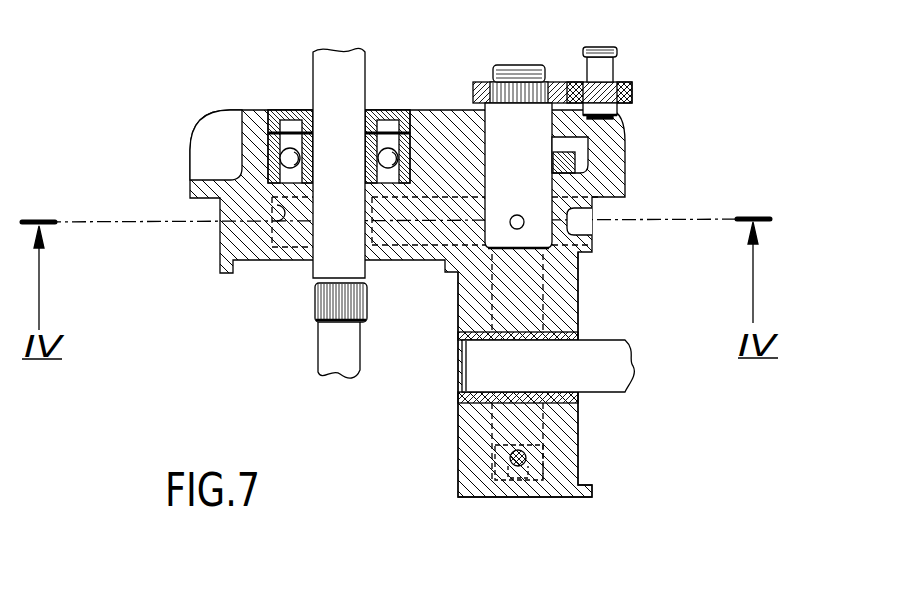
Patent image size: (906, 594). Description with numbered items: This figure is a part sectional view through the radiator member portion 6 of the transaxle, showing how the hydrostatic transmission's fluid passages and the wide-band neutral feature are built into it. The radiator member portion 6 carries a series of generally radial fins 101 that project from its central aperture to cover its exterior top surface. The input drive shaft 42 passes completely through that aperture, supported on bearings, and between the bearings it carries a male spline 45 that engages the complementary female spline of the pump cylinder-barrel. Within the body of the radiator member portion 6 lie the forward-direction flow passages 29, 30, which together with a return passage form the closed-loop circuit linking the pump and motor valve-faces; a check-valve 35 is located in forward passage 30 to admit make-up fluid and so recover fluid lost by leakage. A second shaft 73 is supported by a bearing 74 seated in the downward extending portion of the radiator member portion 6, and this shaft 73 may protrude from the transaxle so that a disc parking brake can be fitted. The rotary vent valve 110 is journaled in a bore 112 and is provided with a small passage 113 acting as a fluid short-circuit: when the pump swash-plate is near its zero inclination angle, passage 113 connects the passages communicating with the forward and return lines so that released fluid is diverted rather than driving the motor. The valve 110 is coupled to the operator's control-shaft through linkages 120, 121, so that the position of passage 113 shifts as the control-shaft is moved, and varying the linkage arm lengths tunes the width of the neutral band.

The radiator member portion 6 is at (430, 123).
The flow passage 29 is at (277, 203).
The flow passage 30 is at (542, 430).
The check-valve 35 is at (518, 481).
The input drive shaft 42 is at (362, 103).
The male spline 45 is at (323, 300).
The shaft 73 is at (557, 378).
The bearing 74 is at (485, 402).
The radial fins 101 is at (207, 142).
The rotary vent valve 110 is at (542, 147).
The bore 112 is at (528, 183).
The small passage 113 is at (521, 216).
The linkage 120 is at (632, 90).
The linkage 121 is at (632, 63).